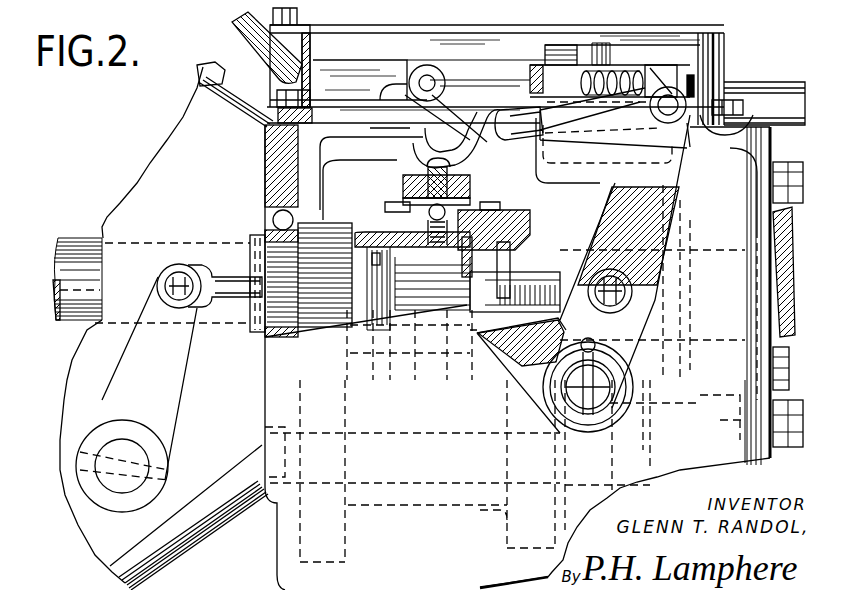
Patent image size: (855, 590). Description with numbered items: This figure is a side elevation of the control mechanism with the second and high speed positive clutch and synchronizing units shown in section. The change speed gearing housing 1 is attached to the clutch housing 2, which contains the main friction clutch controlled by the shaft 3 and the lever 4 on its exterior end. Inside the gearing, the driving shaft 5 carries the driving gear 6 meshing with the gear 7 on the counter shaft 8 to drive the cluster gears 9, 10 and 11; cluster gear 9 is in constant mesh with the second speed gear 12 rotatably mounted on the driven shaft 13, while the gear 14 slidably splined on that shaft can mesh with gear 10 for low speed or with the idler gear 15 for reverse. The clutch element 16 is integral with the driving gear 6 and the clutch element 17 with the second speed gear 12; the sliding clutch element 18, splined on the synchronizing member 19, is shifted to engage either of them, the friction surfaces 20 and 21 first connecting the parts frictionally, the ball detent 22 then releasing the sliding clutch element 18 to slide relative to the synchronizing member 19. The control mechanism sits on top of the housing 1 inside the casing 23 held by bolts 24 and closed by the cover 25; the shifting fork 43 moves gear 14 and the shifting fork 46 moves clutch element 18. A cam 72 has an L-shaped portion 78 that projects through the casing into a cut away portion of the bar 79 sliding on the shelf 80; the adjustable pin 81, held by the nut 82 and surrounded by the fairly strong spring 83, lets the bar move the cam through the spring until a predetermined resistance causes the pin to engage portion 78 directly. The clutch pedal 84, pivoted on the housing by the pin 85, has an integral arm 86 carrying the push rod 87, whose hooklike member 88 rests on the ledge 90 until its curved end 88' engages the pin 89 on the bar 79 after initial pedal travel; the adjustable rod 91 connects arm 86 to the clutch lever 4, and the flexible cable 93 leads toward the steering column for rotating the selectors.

The change speed gearing housing 1 is at (290, 498).
The clutch housing 2 is at (203, 502).
The shaft 3 is at (115, 485).
The lever 4 is at (173, 377).
The driving shaft 5 is at (288, 330).
The driving gear 6 is at (332, 315).
The gear 7 is at (331, 510).
The counter shaft 8 is at (427, 470).
The cluster gear 9 is at (522, 517).
The cluster gear 10 is at (593, 470).
The cluster gear 11 is at (730, 397).
The intermediate or second speed gear 12 is at (523, 228).
The driven shaft 13 is at (720, 272).
The gear 14 is at (683, 207).
The idler gear 15 is at (703, 375).
The clutch element 16 is at (393, 232).
The clutch element 17 is at (500, 207).
The sliding clutch element 18 is at (472, 180).
The synchronizing member 19 is at (377, 232).
The friction surface 20 is at (512, 243).
The friction surface 21 is at (500, 250).
The ball detent 22 is at (470, 192).
The casing 23 is at (726, 55).
The bolts 24 is at (727, 105).
The cover 25 is at (690, 40).
The shifting fork 43 is at (670, 157).
The shifting fork 46 is at (437, 157).
The cover 72 is at (538, 52).
The L-shaped portion 78 is at (568, 46).
The bar 79 is at (508, 60).
The shelf 80 is at (450, 108).
The adjustable pin 81 is at (650, 64).
The nut 82 is at (692, 62).
The spring 83 is at (612, 70).
The clutch pedal 84 is at (534, 380).
The pin 85 is at (561, 400).
The arm 86 is at (645, 312).
The push rod 87 is at (572, 122).
The hooklike member 88 is at (446, 105).
The curved end 88' is at (517, 107).
The pin 89 is at (437, 68).
The ledge 90 is at (364, 118).
The adjustable rod 91 is at (246, 292).
The flexible cable 93 is at (243, 22).